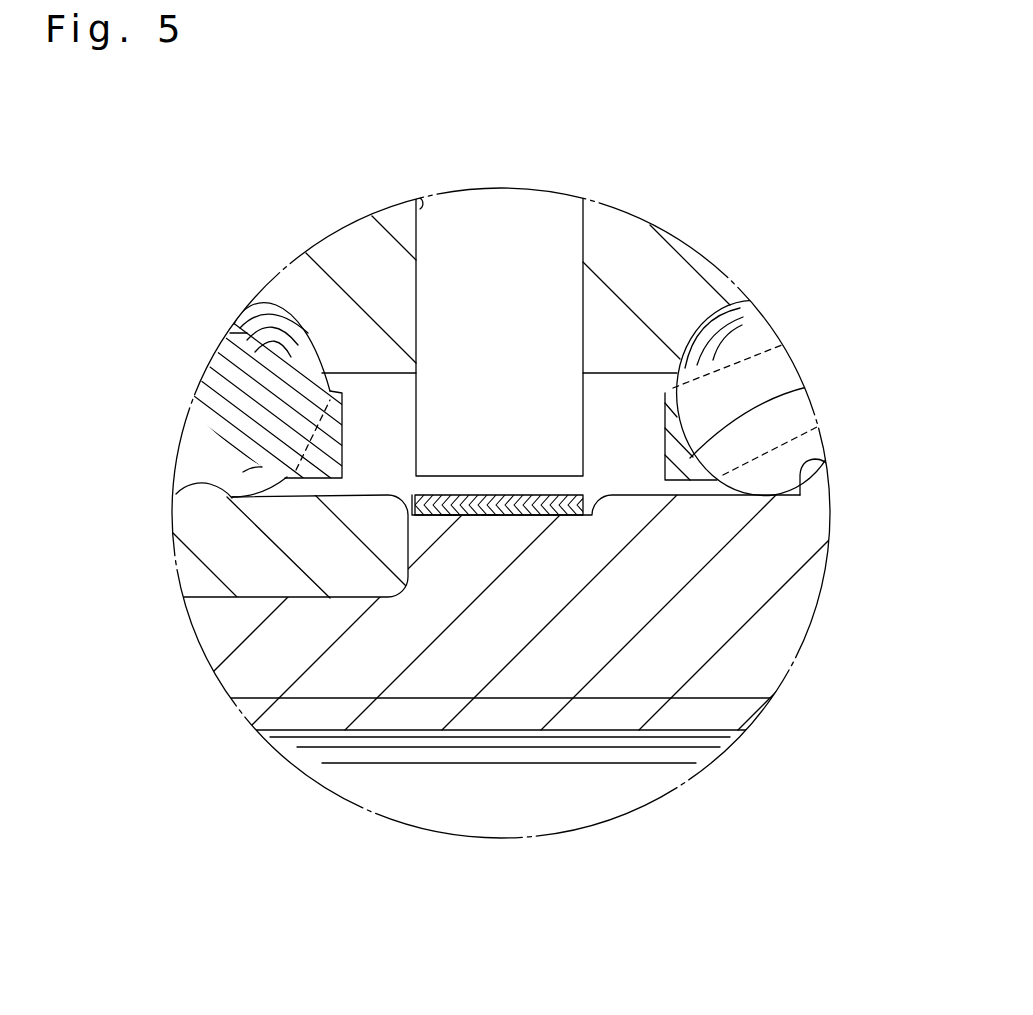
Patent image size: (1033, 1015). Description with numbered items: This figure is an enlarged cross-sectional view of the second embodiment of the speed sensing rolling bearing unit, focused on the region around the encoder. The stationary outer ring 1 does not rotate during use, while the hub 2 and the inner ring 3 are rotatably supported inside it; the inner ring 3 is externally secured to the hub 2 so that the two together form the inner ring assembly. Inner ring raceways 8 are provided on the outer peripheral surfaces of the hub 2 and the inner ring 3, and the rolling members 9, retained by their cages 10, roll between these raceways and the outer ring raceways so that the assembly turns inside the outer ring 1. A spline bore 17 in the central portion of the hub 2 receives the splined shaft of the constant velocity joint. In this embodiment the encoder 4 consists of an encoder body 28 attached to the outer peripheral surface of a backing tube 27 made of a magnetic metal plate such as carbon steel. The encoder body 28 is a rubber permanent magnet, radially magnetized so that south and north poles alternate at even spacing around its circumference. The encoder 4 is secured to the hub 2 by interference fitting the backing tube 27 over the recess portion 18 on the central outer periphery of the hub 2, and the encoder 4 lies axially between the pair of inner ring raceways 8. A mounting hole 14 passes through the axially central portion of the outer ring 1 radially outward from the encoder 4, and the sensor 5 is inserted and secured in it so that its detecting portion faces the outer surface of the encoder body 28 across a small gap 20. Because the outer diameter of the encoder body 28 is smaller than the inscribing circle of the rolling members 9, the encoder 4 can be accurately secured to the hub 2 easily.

The outer ring 1 is at (655, 270).
The hub 2 is at (787, 593).
The inner ring 3 is at (215, 553).
The encoder 4 is at (520, 492).
The sensor 5 is at (550, 218).
The inner ring raceway 8 is at (207, 486).
The rolling member 9 is at (208, 444).
The cage 10 is at (222, 350).
The mounting hole 14 is at (413, 198).
The spline bore 17 is at (680, 730).
The recess portion 18 is at (490, 515).
The gap 20 is at (575, 483).
The backing tube 27 is at (448, 515).
The encoder body 28 is at (550, 492).